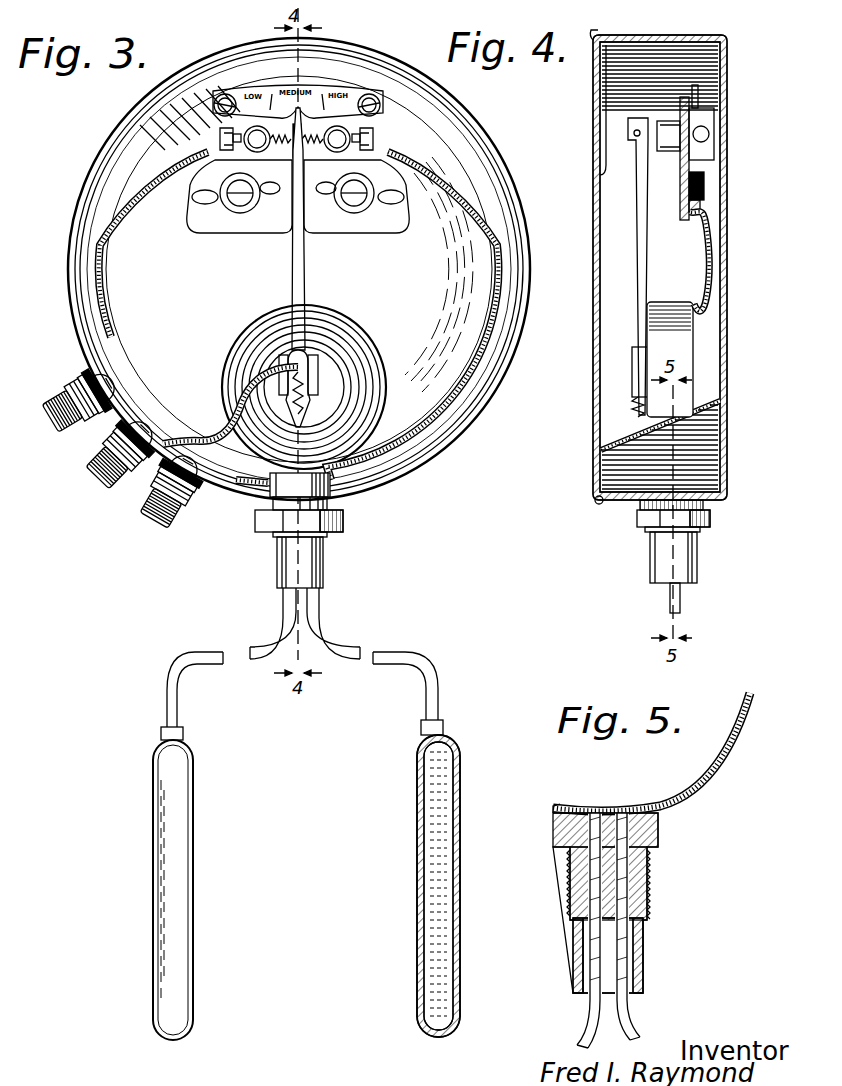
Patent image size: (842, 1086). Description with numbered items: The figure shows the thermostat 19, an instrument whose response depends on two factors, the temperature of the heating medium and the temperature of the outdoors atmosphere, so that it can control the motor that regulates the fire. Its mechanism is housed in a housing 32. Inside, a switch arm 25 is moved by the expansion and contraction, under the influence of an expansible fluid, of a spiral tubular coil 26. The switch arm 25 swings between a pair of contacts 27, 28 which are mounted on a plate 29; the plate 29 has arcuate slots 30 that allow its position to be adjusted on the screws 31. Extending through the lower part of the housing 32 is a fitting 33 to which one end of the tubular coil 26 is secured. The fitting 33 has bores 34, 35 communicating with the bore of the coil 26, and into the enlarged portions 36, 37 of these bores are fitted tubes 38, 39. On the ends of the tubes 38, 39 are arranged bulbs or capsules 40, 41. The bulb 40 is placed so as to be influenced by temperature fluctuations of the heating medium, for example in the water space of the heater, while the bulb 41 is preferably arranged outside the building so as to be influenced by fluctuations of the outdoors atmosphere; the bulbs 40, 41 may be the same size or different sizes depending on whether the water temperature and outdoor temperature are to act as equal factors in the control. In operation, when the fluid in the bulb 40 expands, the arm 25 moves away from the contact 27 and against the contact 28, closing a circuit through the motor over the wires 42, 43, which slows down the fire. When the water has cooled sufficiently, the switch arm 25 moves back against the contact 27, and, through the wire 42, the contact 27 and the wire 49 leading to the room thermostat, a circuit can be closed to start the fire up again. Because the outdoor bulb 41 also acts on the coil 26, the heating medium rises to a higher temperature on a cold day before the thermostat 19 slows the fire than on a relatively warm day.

In FIG. 3, the thermostat 19 is at (212, 356).
In FIG. 3, the switch arm 25 is at (307, 284).
In FIG. 4, the switch arm 25 is at (652, 278).
In FIG. 3, the spiral tubular coil 26 is at (375, 354).
In FIG. 4, the spiral tubular coil 26 is at (690, 298).
In FIG. 5, the spiral tubular coil 26 is at (712, 783).
In FIG. 3, the contact 27 is at (218, 140).
In FIG. 3, the contact 28 is at (335, 128).
In FIG. 3, the plate 29 is at (377, 230).
In FIG. 4, the plate 29 is at (685, 157).
In FIG. 3, the arcuate slots 30 is at (198, 205).
In FIG. 3, the screws 31 is at (241, 212).
In FIG. 4, the screws 31 is at (660, 200).
In FIG. 3, the housing 32 is at (474, 148).
In FIG. 4, the housing 32 is at (729, 343).
In FIG. 3, the fitting 33 is at (321, 570).
In FIG. 4, the fitting 33 is at (698, 553).
In FIG. 5, the fitting 33 is at (650, 846).
In FIG. 5, the bore 34 is at (590, 828).
In FIG. 5, the bore 35 is at (623, 843).
In FIG. 5, the enlarged portion 36 is at (570, 887).
In FIG. 5, the enlarged portion 37 is at (645, 897).
In FIG. 3, the tube 38 is at (250, 651).
In FIG. 5, the tube 38 is at (580, 1020).
In FIG. 3, the tube 39 is at (413, 650).
In FIG. 4, the tube 39 is at (682, 610).
In FIG. 5, the tube 39 is at (633, 1023).
In FIG. 3, the bulb 40 is at (190, 907).
In FIG. 3, the bulb 41 is at (447, 840).
In FIG. 3, the wire 42 is at (138, 475).
In FIG. 3, the wire 43 is at (203, 497).
In FIG. 3, the wire 49 is at (100, 425).